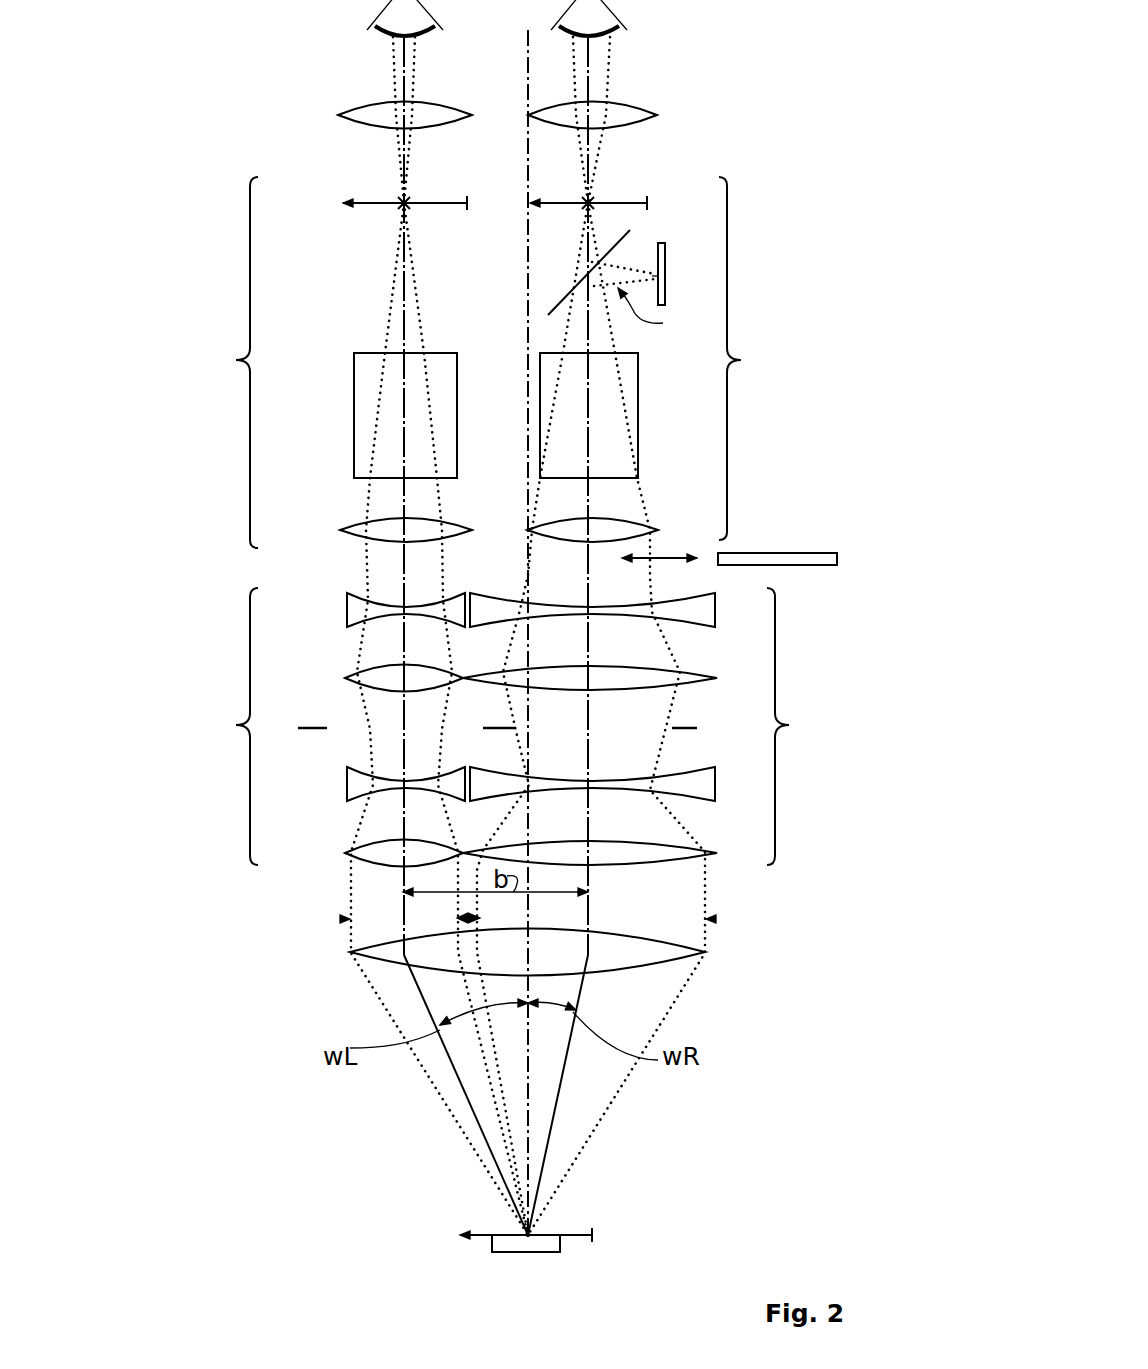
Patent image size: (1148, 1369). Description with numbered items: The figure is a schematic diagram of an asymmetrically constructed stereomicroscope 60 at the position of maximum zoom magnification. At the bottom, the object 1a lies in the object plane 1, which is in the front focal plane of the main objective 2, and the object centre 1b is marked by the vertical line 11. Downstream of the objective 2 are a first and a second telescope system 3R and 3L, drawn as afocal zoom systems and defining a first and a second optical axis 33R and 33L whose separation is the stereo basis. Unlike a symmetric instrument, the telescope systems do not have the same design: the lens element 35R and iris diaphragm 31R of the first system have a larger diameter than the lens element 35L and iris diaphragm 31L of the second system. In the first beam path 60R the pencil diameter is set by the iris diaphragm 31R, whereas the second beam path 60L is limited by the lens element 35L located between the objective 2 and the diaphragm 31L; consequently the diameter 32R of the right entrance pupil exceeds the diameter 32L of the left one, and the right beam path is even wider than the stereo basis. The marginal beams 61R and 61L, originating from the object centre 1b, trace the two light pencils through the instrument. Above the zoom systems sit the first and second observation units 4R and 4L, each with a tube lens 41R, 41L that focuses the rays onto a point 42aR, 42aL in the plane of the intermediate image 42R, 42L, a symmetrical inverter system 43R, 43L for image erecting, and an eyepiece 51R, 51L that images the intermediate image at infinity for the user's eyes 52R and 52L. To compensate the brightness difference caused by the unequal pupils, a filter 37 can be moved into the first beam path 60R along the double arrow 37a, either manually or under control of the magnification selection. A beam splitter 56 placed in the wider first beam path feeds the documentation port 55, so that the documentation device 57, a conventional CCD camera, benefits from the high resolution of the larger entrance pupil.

The object plane 1 is at (490, 1233).
The object 1a is at (492, 1252).
The object centre 1b is at (533, 1232).
The main objective 2 is at (375, 957).
The second telescope system 3L is at (230, 726).
The first telescope system 3R is at (800, 726).
The second observation unit 4L is at (231, 362).
The first observation unit 4R is at (751, 358).
The vertical line 11 is at (528, 52).
The iris diaphragm 31L is at (318, 738).
The iris diaphragm 31R is at (695, 731).
The diameter of the entrance pupil 32L is at (340, 919).
The diameter of the entrance pupil 32R is at (716, 919).
The second optical axis 33L is at (400, 655).
The first optical axis 33R is at (593, 647).
The lens element 35L is at (367, 676).
The lens element 35R is at (695, 612).
The filter 37 is at (748, 553).
The double arrow 37a is at (683, 550).
The tube lens 41L is at (357, 527).
The tube lens 41R is at (642, 518).
The intermediate image 42L is at (372, 207).
The intermediate image 42R is at (620, 207).
The point 42aL is at (405, 208).
The point 42aR is at (590, 200).
The inverter system 43L is at (362, 376).
The inverter system 43R is at (638, 370).
The eyepiece 51L is at (350, 113).
The eyepiece 51R is at (648, 113).
The eye 52L is at (383, 13).
The eye 52R is at (612, 12).
The documentation port 55 is at (659, 322).
The beam splitter 56 is at (556, 300).
The documentation device 57 is at (665, 250).
The stereomicroscope optical system 60 is at (220, 557).
The second beam path 60L is at (440, 1082).
The first beam path 60R is at (600, 1080).
The marginal beam 61L is at (575, 1160).
The marginal beam 61R is at (556, 1188).